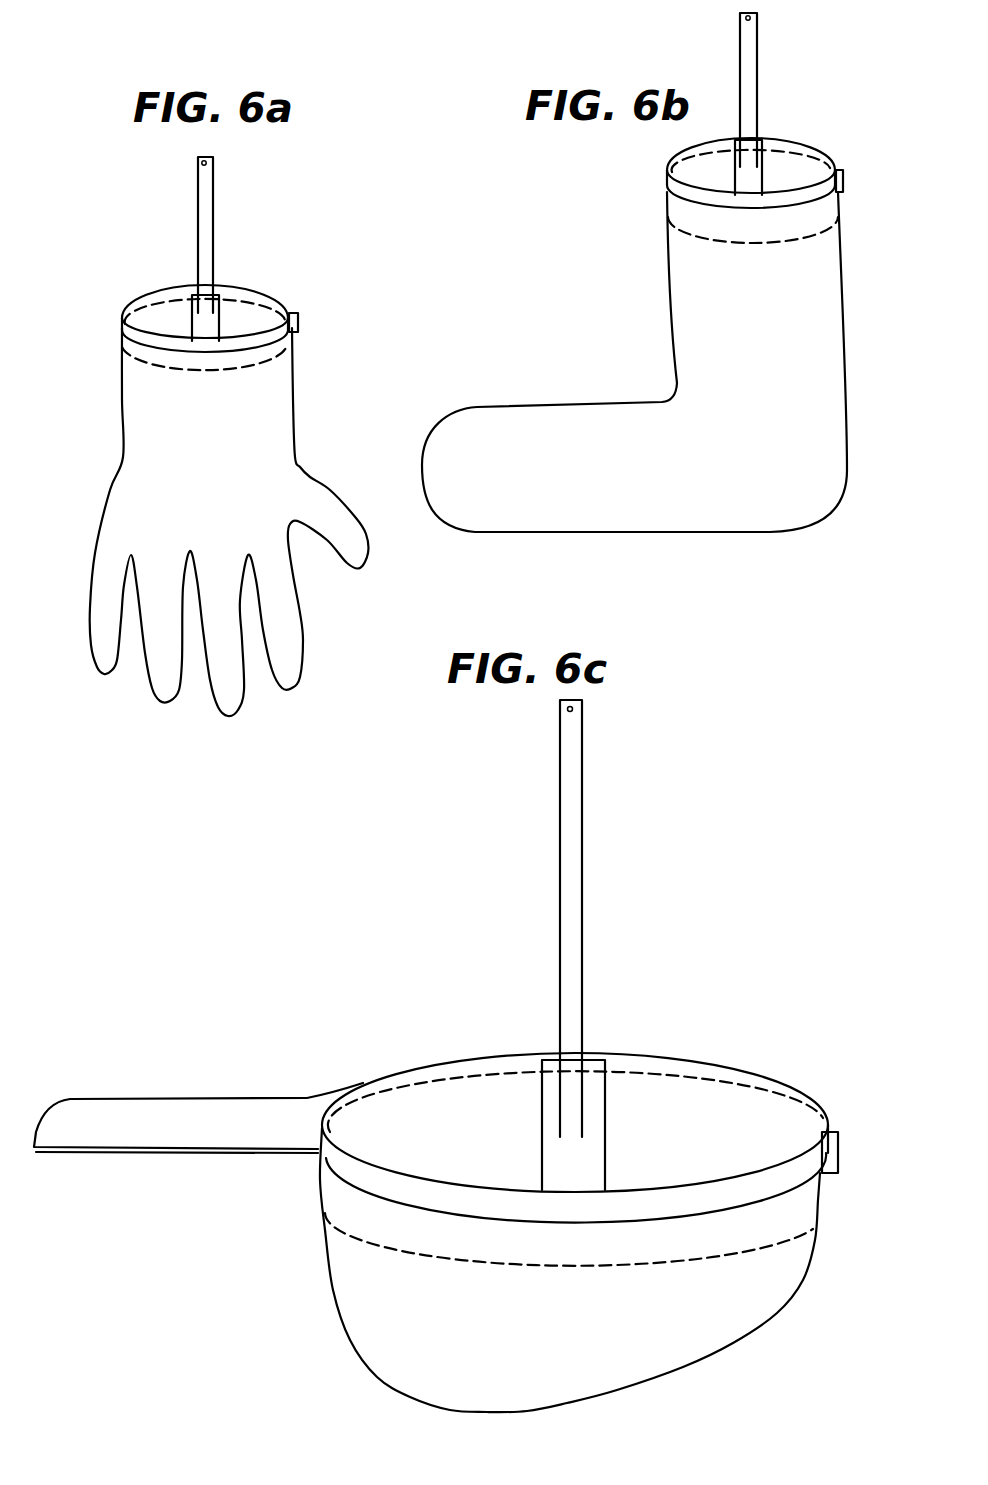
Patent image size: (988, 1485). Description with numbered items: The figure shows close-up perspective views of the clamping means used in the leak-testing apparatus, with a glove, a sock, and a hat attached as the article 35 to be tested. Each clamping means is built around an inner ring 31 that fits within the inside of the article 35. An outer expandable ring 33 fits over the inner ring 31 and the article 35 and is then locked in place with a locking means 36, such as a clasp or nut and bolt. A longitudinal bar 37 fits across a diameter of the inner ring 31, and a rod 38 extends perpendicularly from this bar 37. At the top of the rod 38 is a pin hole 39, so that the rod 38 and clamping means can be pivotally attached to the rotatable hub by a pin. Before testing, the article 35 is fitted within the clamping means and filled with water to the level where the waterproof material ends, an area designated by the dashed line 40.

In FIG. 6a, the inner ring 31 is at (280, 300).
In FIG. 6a, the outer expandable ring 33 is at (277, 332).
In FIG. 6a, the article 35 is at (297, 470).
In FIG. 6a, the locking means 36 is at (298, 317).
In FIG. 6a, the longitudinal bar 37 is at (221, 322).
In FIG. 6a, the rod 38 is at (214, 222).
In FIG. 6a, the pin hole 39 is at (214, 163).
In FIG. 6a, the dashed line 40 is at (122, 352).
In FIG. 6b, the dashed line 40 is at (835, 220).
In FIG. 6c, the dashed line 40 is at (797, 1233).